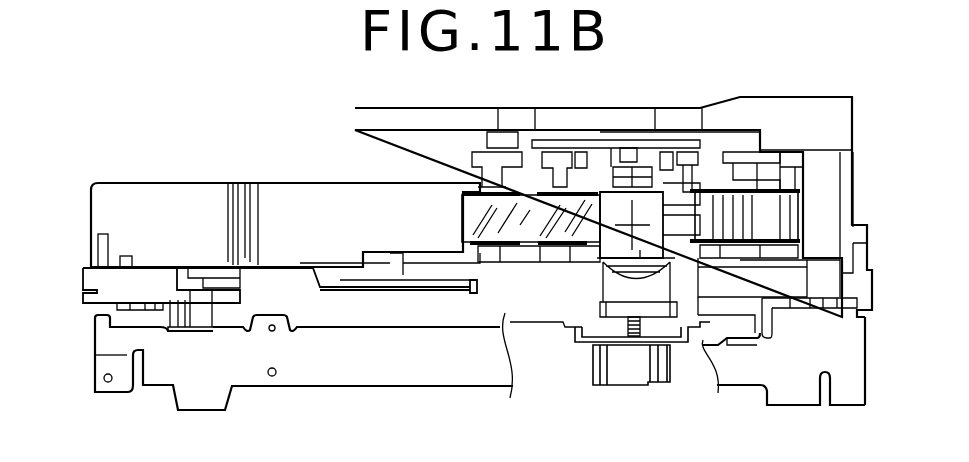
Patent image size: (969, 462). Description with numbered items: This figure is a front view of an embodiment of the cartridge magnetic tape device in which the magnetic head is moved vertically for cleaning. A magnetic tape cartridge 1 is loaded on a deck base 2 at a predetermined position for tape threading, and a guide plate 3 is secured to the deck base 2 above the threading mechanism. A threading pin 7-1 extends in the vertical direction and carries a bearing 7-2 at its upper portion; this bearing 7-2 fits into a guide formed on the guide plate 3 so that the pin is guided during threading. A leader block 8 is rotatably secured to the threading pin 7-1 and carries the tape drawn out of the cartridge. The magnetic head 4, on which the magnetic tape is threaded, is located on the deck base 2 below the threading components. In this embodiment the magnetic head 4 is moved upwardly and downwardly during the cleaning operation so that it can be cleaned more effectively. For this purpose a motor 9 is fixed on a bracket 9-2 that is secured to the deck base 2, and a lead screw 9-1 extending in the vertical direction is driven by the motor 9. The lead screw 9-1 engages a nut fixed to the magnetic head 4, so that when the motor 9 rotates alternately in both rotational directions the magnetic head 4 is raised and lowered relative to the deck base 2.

The magnetic tape cartridge 1 is at (150, 197).
The deck base 2 is at (110, 291).
The guide plate 3 is at (377, 113).
The magnetic head 4 is at (621, 280).
The threading pin 7-1 is at (687, 177).
The bearing 7-2 is at (688, 170).
The leader block 8 is at (622, 213).
The motor 9 is at (620, 378).
The lead screw 9-1 is at (643, 327).
The bracket 9-2 is at (580, 333).